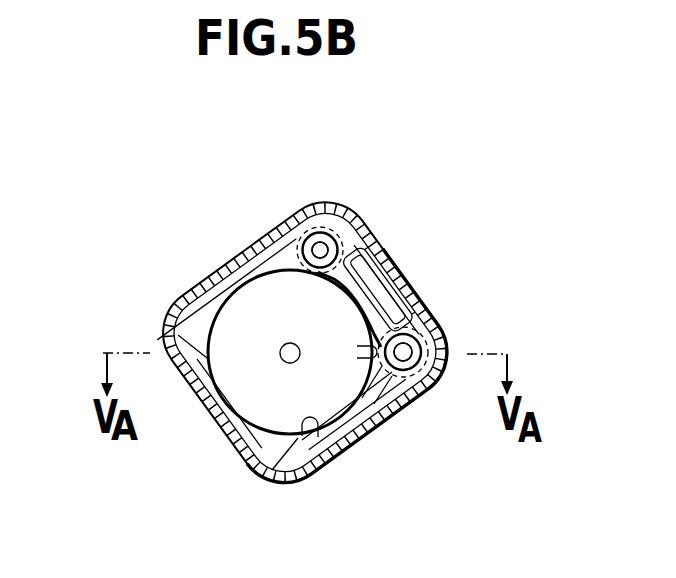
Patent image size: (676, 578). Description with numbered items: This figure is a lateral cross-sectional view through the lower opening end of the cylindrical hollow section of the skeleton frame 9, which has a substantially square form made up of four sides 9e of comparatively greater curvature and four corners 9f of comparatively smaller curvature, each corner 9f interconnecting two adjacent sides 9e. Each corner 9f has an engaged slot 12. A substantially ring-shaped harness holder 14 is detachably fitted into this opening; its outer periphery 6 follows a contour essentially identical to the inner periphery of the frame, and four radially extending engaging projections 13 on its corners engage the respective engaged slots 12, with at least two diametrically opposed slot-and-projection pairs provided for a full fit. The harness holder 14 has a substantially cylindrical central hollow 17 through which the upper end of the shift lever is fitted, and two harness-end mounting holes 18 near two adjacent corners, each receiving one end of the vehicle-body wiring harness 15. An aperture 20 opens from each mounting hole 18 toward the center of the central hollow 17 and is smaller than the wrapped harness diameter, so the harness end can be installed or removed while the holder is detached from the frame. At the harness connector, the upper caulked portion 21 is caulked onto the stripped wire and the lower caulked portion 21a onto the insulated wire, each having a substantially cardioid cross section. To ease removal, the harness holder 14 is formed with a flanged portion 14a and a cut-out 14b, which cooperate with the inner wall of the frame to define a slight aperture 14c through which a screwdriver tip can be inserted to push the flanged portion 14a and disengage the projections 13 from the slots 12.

The conductor 6 is at (318, 236).
The skeleton frame 9 is at (200, 297).
The sides 9e is at (222, 262).
The corners 9f is at (342, 208).
The engaged slot 12 is at (354, 226).
The engaging projection 13 is at (336, 211).
The harness holder 14 is at (353, 420).
The flanged portion 14a is at (405, 255).
The cut-out 14b is at (405, 270).
The slight aperture 14c is at (432, 258).
The vehicle-body wiring harness 15 is at (398, 385).
The central cylindrical hollow 17 is at (320, 440).
The harness-end mounting hole 18 is at (373, 250).
The aperture 20 is at (265, 248).
The upper caulked portion 21 is at (422, 326).
The lower caulked portion 21a is at (300, 232).